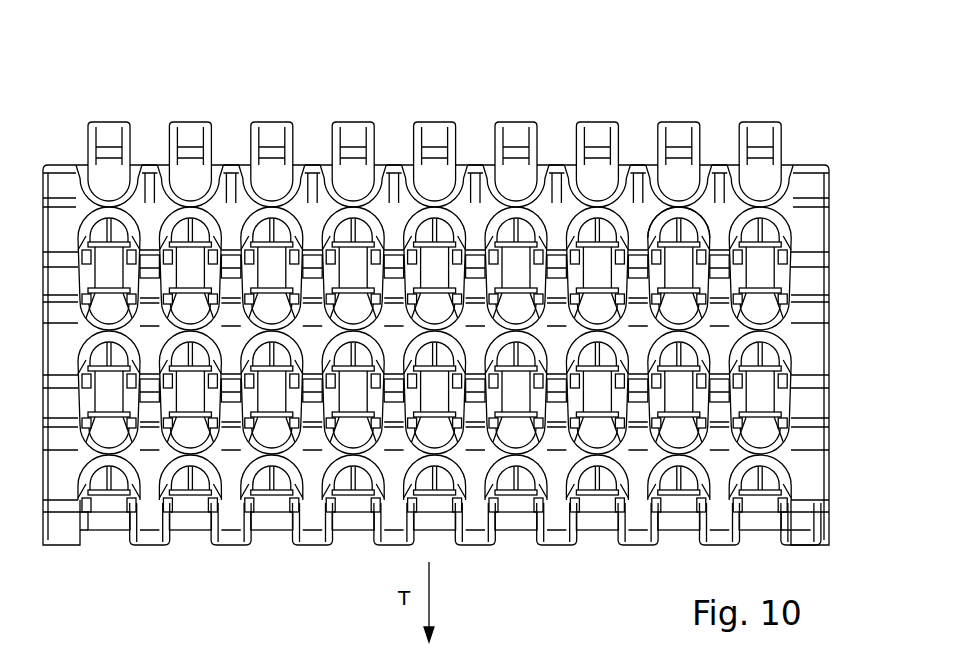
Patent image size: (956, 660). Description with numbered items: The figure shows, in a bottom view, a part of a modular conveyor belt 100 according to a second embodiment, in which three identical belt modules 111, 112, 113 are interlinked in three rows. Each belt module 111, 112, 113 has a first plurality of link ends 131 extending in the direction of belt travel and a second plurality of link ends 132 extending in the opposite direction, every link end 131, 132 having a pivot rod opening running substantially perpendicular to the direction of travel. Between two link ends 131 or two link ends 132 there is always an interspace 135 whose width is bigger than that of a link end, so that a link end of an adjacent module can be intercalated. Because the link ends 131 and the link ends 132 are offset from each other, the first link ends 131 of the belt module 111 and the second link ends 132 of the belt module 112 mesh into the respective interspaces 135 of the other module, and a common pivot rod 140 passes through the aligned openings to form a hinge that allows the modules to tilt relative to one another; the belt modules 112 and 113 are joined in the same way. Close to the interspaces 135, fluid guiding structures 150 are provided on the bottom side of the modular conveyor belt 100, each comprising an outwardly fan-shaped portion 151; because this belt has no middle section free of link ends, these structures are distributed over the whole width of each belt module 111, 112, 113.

The modular conveyor belt 100 is at (135, 108).
The belt module 111 is at (805, 233).
The belt module 112 is at (805, 356).
The belt module 113 is at (805, 478).
The first plurality of link ends 131 is at (638, 283).
The second plurality of link ends 132 is at (675, 262).
The interspace 135 is at (555, 143).
The common pivot rod 140 is at (738, 266).
The fluid guiding structures 150 is at (713, 182).
The outwardly fan-shaped portion 151 is at (702, 223).